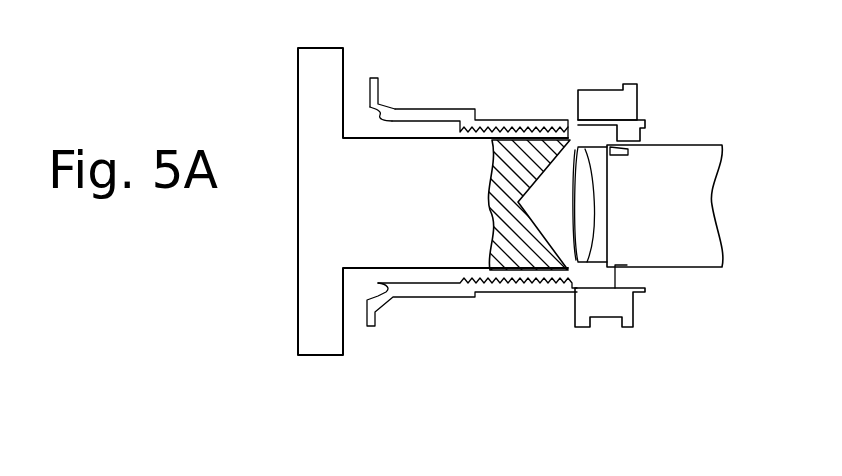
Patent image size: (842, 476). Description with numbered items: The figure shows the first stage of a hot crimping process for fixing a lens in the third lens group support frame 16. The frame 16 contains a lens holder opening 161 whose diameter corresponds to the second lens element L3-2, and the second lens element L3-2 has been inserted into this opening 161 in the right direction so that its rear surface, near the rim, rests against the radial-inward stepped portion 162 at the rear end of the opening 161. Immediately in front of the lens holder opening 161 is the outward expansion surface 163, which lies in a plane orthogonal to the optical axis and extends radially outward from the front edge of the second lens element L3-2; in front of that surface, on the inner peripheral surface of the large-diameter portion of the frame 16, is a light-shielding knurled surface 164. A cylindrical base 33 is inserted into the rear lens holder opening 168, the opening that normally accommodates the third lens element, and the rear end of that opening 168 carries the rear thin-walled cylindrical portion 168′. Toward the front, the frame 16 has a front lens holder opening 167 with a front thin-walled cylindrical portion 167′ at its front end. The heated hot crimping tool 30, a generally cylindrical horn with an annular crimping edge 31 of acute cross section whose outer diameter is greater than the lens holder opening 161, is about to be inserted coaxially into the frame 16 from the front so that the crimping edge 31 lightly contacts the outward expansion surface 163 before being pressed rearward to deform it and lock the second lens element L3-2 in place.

The hot crimping tool 30 is at (316, 230).
The annular crimping edge 31 is at (557, 144).
The third lens group support frame 16 is at (452, 168).
The cylindrical base 33 is at (654, 182).
The lens holder opening 161 is at (591, 200).
The radial-inward stepped portion 162 is at (588, 163).
The outward expansion surface 163 is at (583, 87).
The light-shielding knurled surface 164 is at (493, 142).
The front lens holder opening 167 is at (452, 168).
The front thin-walled cylindrical portion 167′ is at (384, 123).
The rear lens holder opening 168 is at (630, 149).
The rear thin-walled cylindrical portion 168′ is at (622, 270).
The second lens element L3-2 is at (583, 226).